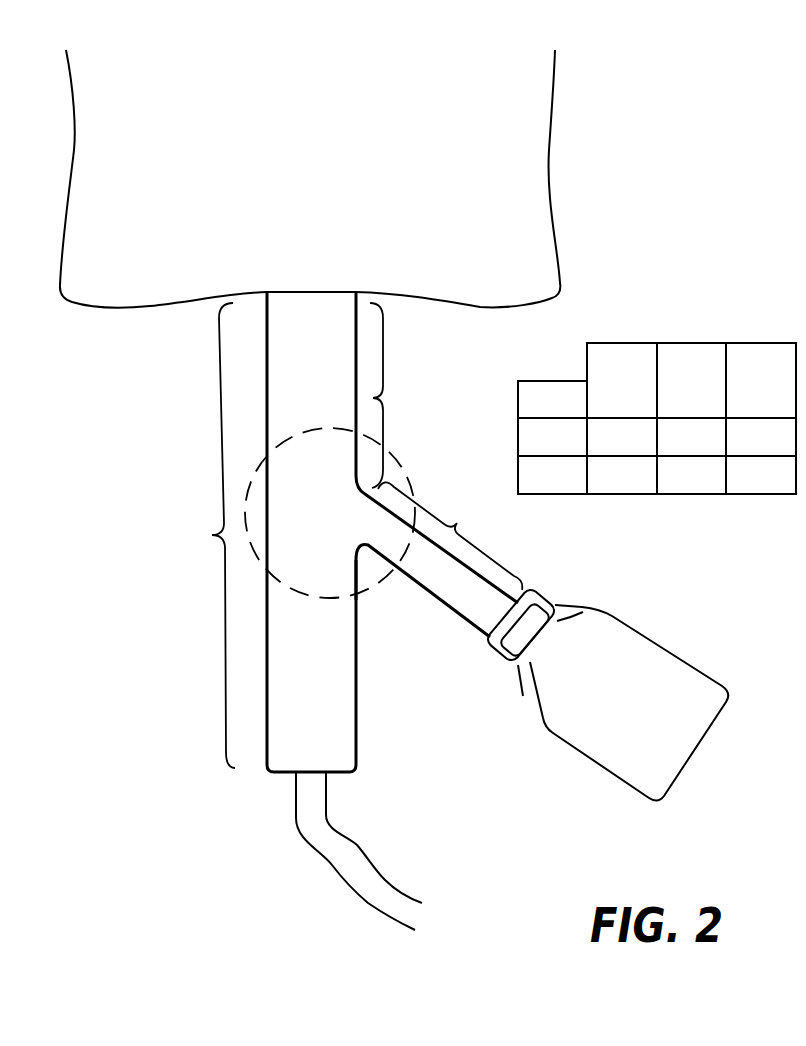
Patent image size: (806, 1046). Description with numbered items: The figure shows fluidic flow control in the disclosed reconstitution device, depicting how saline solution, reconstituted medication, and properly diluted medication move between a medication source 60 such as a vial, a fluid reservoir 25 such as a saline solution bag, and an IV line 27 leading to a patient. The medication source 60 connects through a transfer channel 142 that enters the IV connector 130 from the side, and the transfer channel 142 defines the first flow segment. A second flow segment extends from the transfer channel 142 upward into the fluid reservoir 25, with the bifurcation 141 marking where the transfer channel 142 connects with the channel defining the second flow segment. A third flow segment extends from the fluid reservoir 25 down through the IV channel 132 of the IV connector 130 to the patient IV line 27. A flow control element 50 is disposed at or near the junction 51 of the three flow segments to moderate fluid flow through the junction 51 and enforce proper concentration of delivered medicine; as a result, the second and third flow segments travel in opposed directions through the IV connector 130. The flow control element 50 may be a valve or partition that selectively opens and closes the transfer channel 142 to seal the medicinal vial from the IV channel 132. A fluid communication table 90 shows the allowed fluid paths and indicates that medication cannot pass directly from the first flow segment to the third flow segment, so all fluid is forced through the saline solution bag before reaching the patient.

The fluid reservoir 25 is at (282, 194).
The IV line 27 is at (355, 836).
The flow control element 50 is at (263, 470).
The junction 51 is at (302, 530).
The medication source 60 is at (612, 733).
The fluid communication table 90 is at (758, 495).
The IV connector 130 is at (318, 532).
The IV channel 132 is at (265, 713).
The bifurcation 141 is at (375, 600).
The transfer channel 142 is at (452, 607).